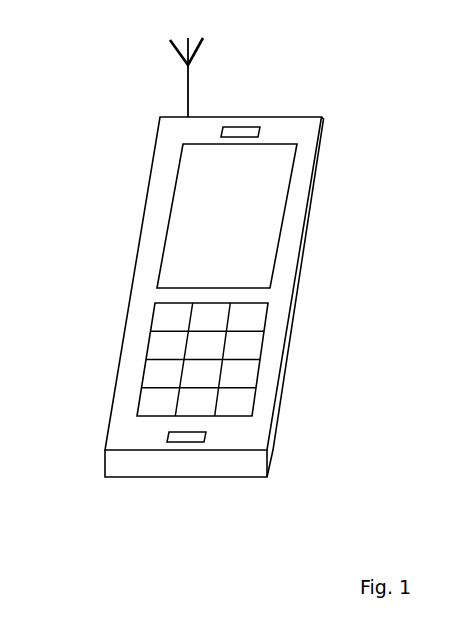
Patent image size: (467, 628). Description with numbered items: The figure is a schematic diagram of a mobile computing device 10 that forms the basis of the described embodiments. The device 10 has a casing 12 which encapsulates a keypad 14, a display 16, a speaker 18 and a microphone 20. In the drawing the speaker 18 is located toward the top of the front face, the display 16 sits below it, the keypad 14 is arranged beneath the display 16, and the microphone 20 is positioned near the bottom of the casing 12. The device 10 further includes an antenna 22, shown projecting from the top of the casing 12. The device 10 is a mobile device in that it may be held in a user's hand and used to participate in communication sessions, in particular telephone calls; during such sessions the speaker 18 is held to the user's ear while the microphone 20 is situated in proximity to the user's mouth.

The mobile computing device 10 is at (120, 168).
The casing 12 is at (120, 357).
The keypad 14 is at (240, 350).
The display 16 is at (266, 210).
The speaker 18 is at (247, 130).
The microphone 20 is at (185, 440).
The antenna 22 is at (187, 87).